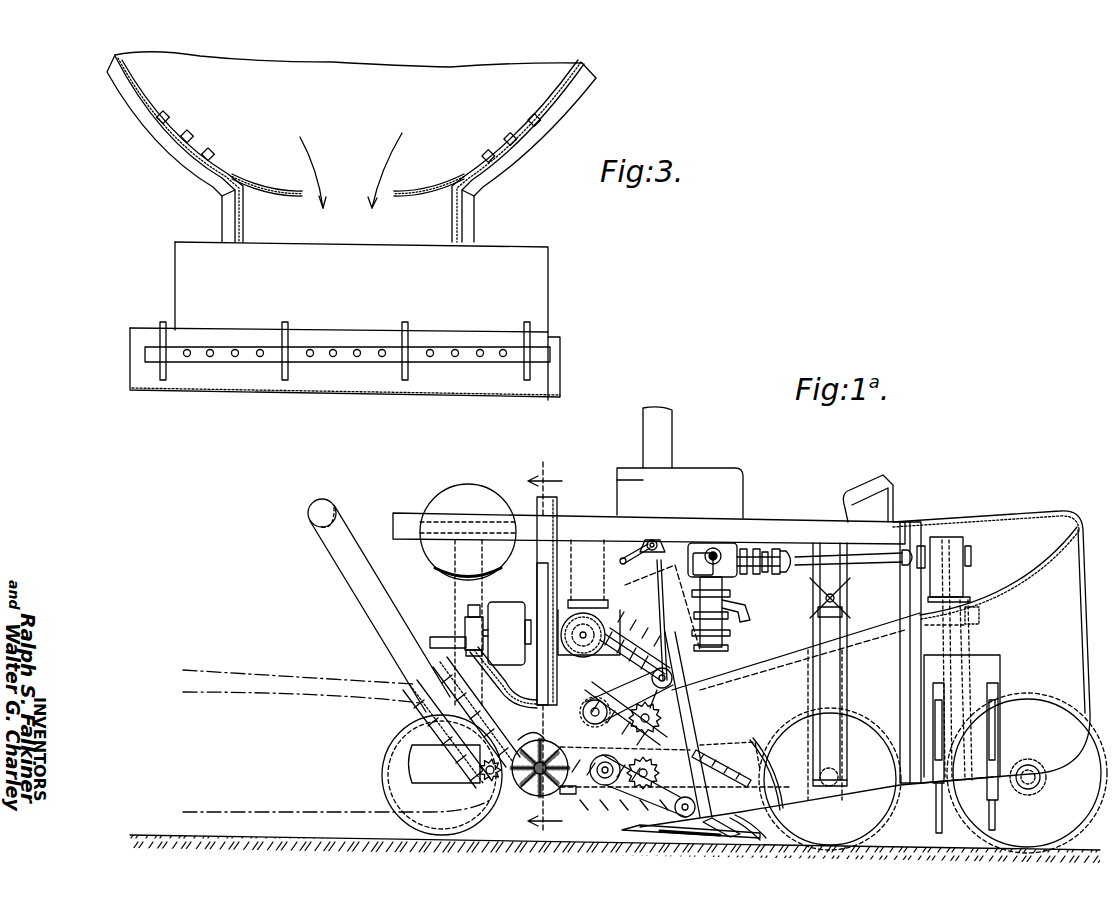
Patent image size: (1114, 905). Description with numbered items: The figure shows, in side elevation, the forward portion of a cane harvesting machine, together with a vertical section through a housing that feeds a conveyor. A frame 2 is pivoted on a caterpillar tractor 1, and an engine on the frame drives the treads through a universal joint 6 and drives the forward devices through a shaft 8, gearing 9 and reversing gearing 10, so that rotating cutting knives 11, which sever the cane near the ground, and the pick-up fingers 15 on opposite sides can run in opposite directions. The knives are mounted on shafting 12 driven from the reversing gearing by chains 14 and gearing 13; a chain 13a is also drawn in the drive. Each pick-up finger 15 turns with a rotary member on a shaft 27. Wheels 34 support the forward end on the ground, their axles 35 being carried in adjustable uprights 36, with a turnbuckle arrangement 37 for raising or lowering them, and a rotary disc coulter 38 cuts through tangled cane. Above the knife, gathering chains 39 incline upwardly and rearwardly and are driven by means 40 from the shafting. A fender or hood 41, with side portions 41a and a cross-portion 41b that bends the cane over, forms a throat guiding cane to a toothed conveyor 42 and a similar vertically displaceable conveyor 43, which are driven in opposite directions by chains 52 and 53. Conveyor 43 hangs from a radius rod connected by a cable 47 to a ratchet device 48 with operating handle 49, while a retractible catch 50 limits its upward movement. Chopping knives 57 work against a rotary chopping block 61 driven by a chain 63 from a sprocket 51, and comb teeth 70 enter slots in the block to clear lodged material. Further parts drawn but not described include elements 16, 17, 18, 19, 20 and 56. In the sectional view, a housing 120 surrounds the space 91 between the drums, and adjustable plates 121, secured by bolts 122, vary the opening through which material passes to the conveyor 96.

In FIG. 3, the housing 120 is at (140, 98).
In FIG. 3, the adjustable plates 121 is at (262, 182).
In FIG. 3, the bolts 122 is at (163, 118).
In FIG. 3, the space between the drums 91 is at (351, 170).
In FIG. 3, the conveyor 96 is at (345, 352).
In FIG. 1A, the caterpillar tractor 1 is at (283, 668).
In FIG. 1A, the frame 2 is at (584, 518).
In FIG. 1A, the universal joint 6 is at (545, 647).
In FIG. 1A, the shaft 8 is at (440, 637).
In FIG. 1A, the gearing 9 is at (500, 605).
In FIG. 1A, the reversing gearing 10 is at (583, 625).
In FIG. 1A, the rotating cutting knives 11 is at (740, 836).
In FIG. 1A, the shafting 12 is at (700, 698).
In FIG. 1A, the gearing 13 is at (432, 720).
In FIG. 1A, the conveyor sprocket 13a is at (580, 800).
In FIG. 1A, the chains 14 is at (462, 672).
In FIG. 1A, the pick-up finger 15 is at (730, 570).
In FIG. 1A, the chain 16 is at (970, 634).
In FIG. 1A, the gear housing 17 is at (965, 560).
In FIG. 1A, the drive chain 18 is at (948, 540).
In FIG. 1A, the sprocket 19 is at (975, 612).
In FIG. 1A, the drive shaft 20 is at (860, 560).
In FIG. 1A, the shaft 27 is at (962, 716).
In FIG. 1A, the wheels 34 is at (878, 808).
In FIG. 1A, the axles 35 is at (838, 774).
In FIG. 1A, the adjustable uprights 36 is at (845, 672).
In FIG. 1A, the turnbuckle arrangement 37 is at (805, 598).
In FIG. 1A, the rotary disc coulter 38 is at (985, 823).
In FIG. 1A, the gathering chains 39 is at (752, 768).
In FIG. 1A, the driving means 40 is at (715, 752).
In FIG. 1A, the fender or hood 41 is at (1005, 522).
In FIG. 1A, the side portions 41a is at (1077, 590).
In FIG. 1A, the cross-portion 41b is at (1032, 565).
In FIG. 1A, the toothed conveyor 42 is at (660, 828).
In FIG. 1A, the conveyor 43 is at (660, 722).
In FIG. 1A, the cable 47 is at (660, 630).
In FIG. 1A, the ratchet device 48 is at (650, 540).
In FIG. 1A, the operating handle 49 is at (645, 558).
In FIG. 1A, the retractible catch 50 is at (700, 628).
In FIG. 1A, the sprocket 51 is at (610, 785).
In FIG. 1A, the chain 52 is at (538, 674).
In FIG. 1A, the chain 53 is at (640, 635).
In FIG. 1A, the inner post 56 is at (560, 575).
In FIG. 1A, the knives 57 is at (543, 515).
In FIG. 1A, the rotary chopping block 61 is at (525, 790).
In FIG. 1A, the chain 63 is at (537, 712).
In FIG. 1A, the teeth 70 is at (553, 790).